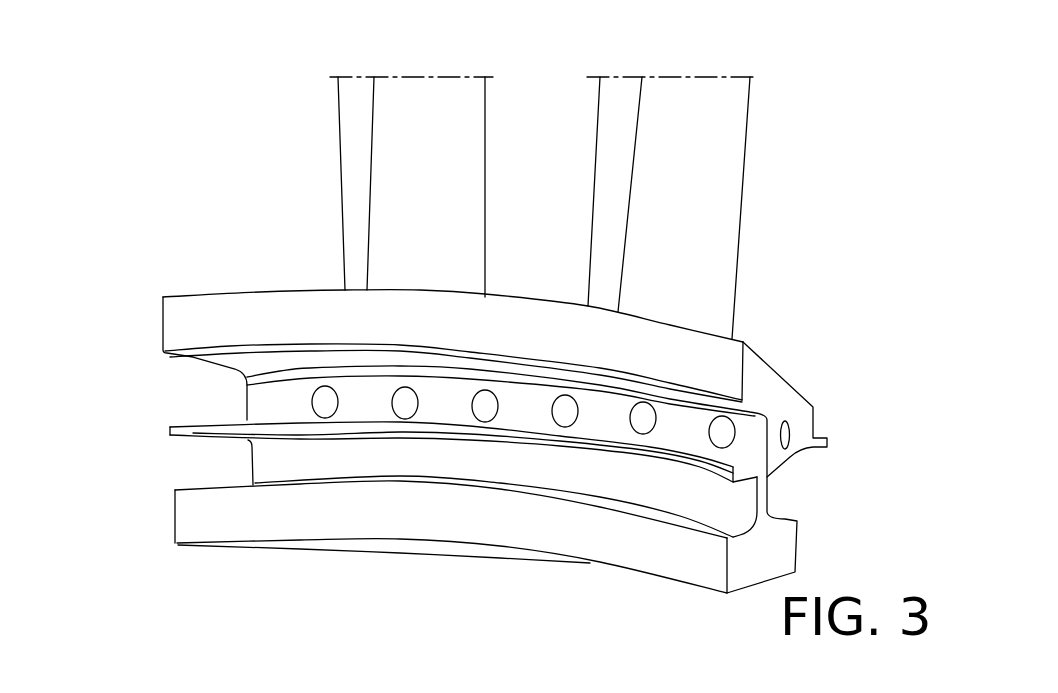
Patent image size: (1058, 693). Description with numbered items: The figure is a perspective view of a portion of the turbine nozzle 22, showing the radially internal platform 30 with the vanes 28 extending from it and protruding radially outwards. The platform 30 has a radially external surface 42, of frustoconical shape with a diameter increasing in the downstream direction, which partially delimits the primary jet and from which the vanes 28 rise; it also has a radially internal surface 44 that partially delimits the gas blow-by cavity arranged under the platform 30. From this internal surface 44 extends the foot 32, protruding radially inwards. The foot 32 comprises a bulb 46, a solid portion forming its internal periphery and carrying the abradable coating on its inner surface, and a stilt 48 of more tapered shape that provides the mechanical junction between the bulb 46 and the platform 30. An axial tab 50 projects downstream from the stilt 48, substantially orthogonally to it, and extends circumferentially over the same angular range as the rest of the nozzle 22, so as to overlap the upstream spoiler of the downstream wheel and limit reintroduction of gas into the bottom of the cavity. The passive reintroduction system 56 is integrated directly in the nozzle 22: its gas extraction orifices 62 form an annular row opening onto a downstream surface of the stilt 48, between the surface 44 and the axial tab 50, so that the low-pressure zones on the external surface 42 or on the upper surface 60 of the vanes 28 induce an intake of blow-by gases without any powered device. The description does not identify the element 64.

The nozzle 22 is at (174, 140).
The vanes 28 is at (660, 157).
The radially internal platform 30 is at (308, 307).
The foot 32 is at (285, 525).
The radially external surface 42 is at (223, 290).
The radially internal surface 44 is at (213, 358).
The bulb 46 is at (197, 515).
The stilt 48 is at (275, 449).
The axial tab 50 is at (600, 450).
The passive system for reintroducing blow-by gas 56 is at (750, 440).
The upper surface of the vanes 60 is at (350, 138).
The gas extraction orifices 62 is at (563, 417).
The web 64 is at (263, 462).